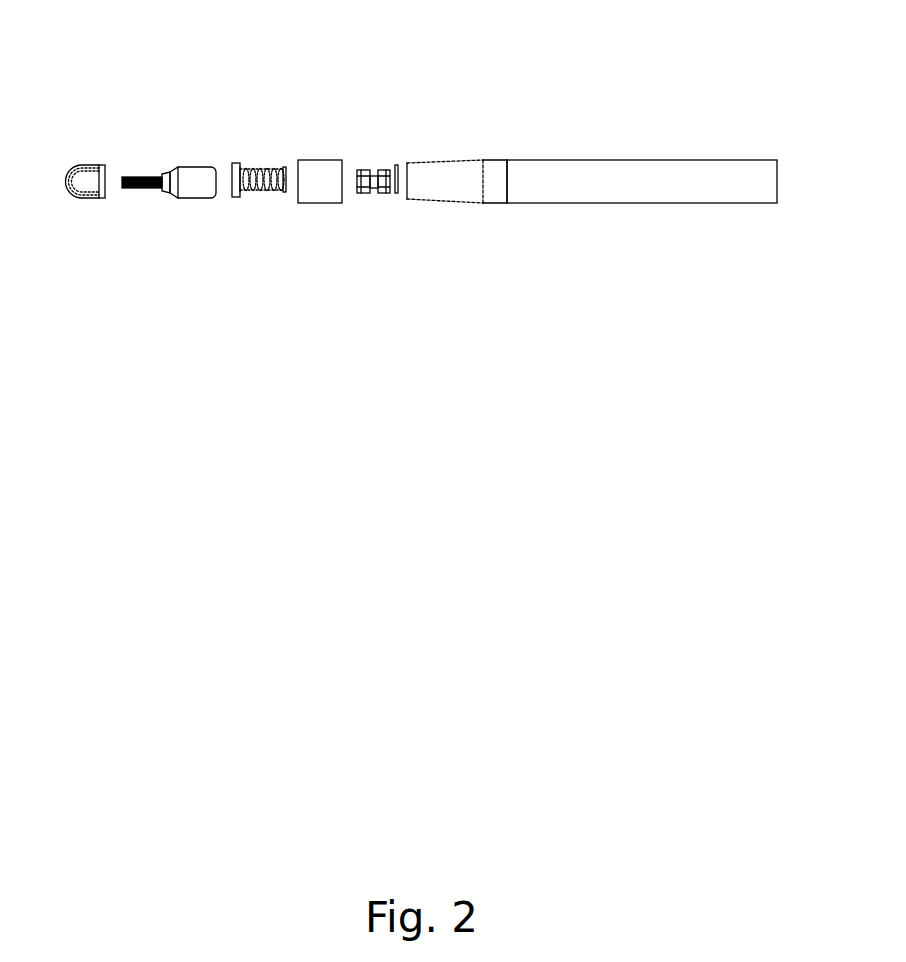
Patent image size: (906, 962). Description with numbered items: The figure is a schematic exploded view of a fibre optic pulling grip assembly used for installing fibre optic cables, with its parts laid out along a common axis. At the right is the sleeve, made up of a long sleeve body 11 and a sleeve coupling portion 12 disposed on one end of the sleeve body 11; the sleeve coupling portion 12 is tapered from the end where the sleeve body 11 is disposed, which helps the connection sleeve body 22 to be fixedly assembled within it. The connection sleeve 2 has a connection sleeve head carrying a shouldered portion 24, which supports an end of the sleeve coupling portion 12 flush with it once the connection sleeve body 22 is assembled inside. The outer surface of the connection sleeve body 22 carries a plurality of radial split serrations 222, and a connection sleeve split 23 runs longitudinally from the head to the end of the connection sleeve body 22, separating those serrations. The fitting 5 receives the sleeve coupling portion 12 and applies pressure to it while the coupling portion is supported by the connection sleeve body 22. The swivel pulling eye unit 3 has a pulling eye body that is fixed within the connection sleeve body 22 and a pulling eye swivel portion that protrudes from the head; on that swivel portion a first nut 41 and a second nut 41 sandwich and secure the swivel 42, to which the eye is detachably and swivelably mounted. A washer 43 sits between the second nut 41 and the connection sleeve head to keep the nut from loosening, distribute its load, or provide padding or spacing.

The connection sleeve 2 is at (226, 188).
The swivel pulling eye unit 3 is at (195, 170).
The fitting 5 is at (328, 172).
The sleeve body 11 is at (605, 168).
The sleeve coupling portion 12 is at (457, 170).
The connection sleeve body 22 is at (289, 188).
The connection sleeve split 23 is at (286, 167).
The shouldered portion 24 is at (234, 196).
The nut 41 is at (381, 170).
The swivel 42 is at (376, 170).
The washer 43 is at (398, 195).
The radial split serrations 222 is at (250, 163).